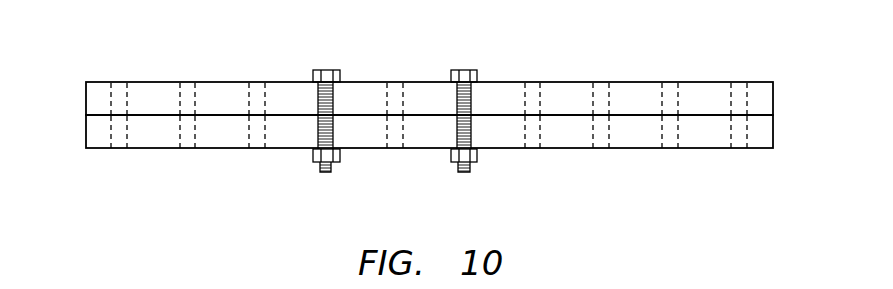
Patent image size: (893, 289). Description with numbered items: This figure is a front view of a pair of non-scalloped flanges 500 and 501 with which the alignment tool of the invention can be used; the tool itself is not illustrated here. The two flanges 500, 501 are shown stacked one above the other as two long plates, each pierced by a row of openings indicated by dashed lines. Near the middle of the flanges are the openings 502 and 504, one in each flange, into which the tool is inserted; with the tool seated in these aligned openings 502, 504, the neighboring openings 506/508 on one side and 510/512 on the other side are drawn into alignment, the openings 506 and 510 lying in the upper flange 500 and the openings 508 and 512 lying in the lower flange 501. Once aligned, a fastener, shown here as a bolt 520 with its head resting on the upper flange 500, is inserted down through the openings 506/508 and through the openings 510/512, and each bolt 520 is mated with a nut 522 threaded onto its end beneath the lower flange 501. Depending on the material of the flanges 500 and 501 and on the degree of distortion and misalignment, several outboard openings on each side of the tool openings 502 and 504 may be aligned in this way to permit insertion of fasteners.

The flange 500 is at (86, 99).
The flange 501 is at (86, 130).
The opening 502 is at (393, 84).
The opening 504 is at (395, 141).
The opening 506 is at (472, 99).
The opening 508 is at (472, 129).
The opening 510 is at (313, 99).
The opening 512 is at (335, 122).
The bolt 520 is at (324, 70).
The nut 522 is at (312, 154).